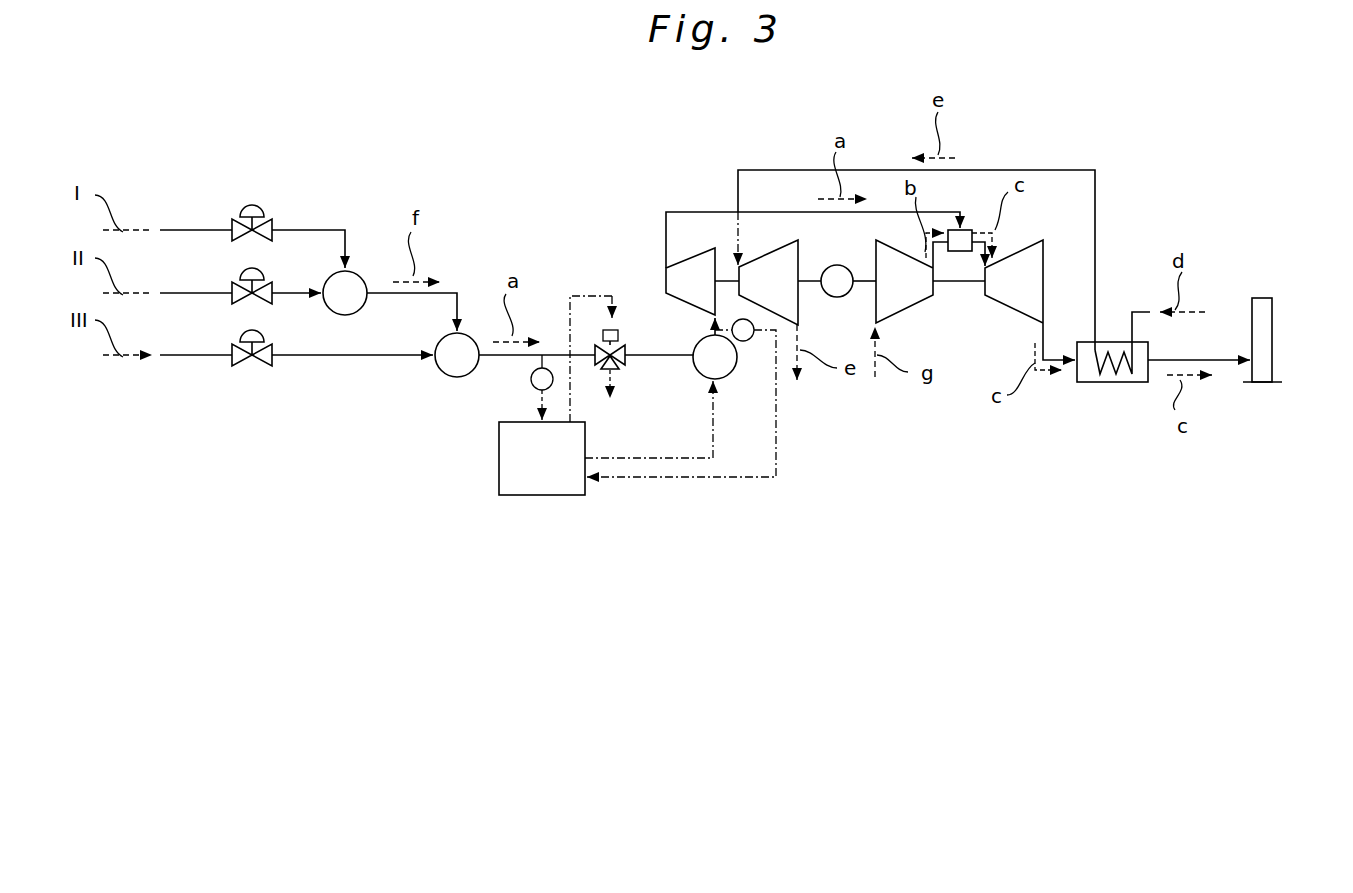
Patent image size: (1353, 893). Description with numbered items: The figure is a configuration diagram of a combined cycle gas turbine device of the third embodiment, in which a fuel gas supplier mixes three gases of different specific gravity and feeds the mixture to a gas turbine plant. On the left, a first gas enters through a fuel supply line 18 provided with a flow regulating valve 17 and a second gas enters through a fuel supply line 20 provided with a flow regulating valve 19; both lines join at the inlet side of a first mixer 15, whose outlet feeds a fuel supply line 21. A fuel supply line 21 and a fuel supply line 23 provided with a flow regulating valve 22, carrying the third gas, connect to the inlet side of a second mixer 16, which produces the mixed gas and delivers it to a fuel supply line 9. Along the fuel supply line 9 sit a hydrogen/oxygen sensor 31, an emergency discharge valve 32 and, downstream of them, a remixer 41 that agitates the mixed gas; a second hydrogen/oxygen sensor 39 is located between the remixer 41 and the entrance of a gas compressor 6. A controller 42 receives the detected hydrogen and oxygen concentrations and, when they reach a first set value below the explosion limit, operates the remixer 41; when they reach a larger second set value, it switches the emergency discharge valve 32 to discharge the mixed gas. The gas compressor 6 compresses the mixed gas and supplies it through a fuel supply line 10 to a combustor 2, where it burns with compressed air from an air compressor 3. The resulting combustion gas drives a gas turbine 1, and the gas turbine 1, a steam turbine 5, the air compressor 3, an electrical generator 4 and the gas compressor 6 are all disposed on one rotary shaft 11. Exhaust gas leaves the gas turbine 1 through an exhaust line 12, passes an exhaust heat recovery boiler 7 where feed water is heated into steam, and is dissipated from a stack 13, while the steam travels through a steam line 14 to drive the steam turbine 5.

The gas turbine 1 is at (1030, 244).
The combustor 2 is at (969, 230).
The air compressor 3 is at (889, 246).
The electrical generator 4 is at (838, 264).
The steam turbine 5 is at (768, 262).
The gas compressor 6 is at (697, 258).
The exhaust heat recovery boiler 7 is at (1112, 384).
The fuel supply line 9 is at (660, 362).
The fuel supply line 10 is at (665, 225).
The rotary shaft 11 is at (956, 285).
The exhaust line 12 is at (1173, 358).
The stack 13 is at (1272, 320).
The steam line 14 is at (1097, 205).
The first mixer 15 is at (368, 303).
The second mixer 16 is at (447, 376).
The flow regulating valve 17 is at (262, 210).
The fuel supply line 18 is at (193, 230).
The flow regulating valve 19 is at (262, 273).
The fuel supply line 20 is at (193, 293).
The fuel supply line 21 is at (455, 290).
The flow regulating valve 22 is at (262, 335).
The fuel supply line 23 is at (193, 355).
The hydrogen/oxygen sensor 31 is at (530, 382).
The emergency discharge valve 32 is at (622, 326).
The hydrogen/oxygen sensor 39 is at (750, 343).
The remixer 41 is at (697, 375).
The controller 42 is at (545, 497).